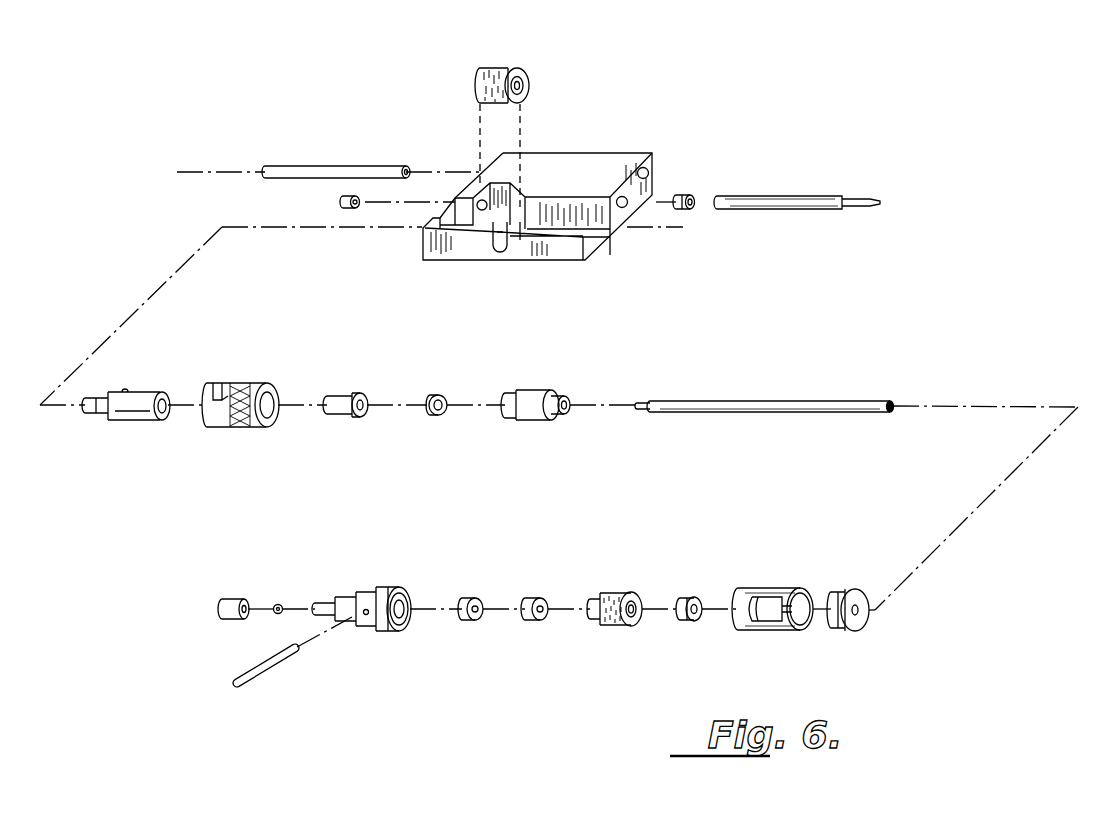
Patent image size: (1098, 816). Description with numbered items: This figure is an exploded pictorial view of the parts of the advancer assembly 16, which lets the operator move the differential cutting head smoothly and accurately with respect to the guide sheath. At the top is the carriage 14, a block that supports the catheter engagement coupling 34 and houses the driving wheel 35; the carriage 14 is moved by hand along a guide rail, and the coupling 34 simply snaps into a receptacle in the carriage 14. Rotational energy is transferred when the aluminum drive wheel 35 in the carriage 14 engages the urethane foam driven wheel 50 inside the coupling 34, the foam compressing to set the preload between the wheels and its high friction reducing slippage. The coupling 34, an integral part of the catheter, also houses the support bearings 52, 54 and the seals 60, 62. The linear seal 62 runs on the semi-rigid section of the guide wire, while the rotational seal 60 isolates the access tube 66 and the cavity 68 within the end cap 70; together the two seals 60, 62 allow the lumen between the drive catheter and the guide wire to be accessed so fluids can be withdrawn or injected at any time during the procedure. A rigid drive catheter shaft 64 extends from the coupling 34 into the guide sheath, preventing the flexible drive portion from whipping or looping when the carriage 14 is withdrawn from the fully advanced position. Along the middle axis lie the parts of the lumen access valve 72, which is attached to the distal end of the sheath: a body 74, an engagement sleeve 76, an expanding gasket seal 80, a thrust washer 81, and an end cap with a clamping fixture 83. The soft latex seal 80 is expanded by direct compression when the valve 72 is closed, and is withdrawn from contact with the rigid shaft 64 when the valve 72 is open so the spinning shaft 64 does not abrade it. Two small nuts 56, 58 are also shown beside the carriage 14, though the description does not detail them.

The carriage 14 is at (613, 165).
The advancer assembly 16 is at (760, 182).
The driving wheel 35 is at (500, 67).
The nut 56 is at (343, 203).
The nut 58 is at (683, 196).
The lumen access valve 72 is at (221, 313).
The body 74 is at (143, 392).
The engagement sleeve 76 is at (243, 383).
The expanding gasket seal 80 is at (343, 394).
The thrust washer 81 is at (437, 395).
The end cap with clamping fixture 83 is at (530, 390).
The rigid drive catheter shaft 64 is at (740, 401).
The catheter engagement coupling 34 is at (266, 522).
The linear seal 62 is at (278, 603).
The end cap 70 is at (375, 601).
The cavity 68 is at (404, 621).
The access tube 66 is at (283, 665).
The rotational seal 60 is at (477, 598).
The support bearing 52 is at (537, 598).
The driven wheel 50 is at (620, 593).
The support bearing 54 is at (693, 598).